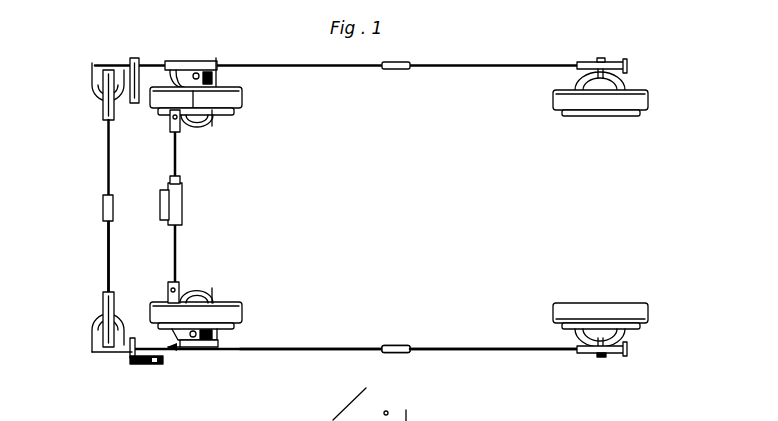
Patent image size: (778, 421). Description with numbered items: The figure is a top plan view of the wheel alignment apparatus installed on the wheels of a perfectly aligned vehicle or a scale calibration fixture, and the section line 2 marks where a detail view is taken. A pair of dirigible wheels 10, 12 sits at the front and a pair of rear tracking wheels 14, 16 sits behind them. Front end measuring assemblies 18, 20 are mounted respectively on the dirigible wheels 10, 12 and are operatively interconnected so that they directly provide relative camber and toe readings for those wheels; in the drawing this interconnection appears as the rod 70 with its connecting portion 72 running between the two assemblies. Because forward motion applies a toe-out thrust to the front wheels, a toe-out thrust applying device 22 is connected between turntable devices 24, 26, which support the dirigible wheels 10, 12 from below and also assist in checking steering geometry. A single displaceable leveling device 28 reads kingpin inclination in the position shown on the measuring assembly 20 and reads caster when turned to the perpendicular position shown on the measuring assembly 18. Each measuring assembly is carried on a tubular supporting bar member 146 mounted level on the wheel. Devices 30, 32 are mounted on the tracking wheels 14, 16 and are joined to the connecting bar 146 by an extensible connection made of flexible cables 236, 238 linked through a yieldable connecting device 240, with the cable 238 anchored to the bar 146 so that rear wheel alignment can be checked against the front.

The section line 2- 2 is at (193, 62).
The dirigible wheel 10 is at (250, 102).
The dirigible wheel 12 is at (247, 304).
The tracking wheel 14 is at (655, 100).
The tracking wheel 16 is at (655, 326).
The front end measuring assembly 18 is at (100, 54).
The front end measuring assembly 20 is at (90, 357).
The toe-out thrust applying device 22 is at (183, 242).
The turntable device 24 is at (206, 125).
The turntable device 26 is at (212, 290).
The displaceable leveling device 28 is at (134, 105).
The device 30 is at (632, 52).
The device 32 is at (600, 360).
The coupling 70 is at (104, 205).
The rod 72 is at (106, 250).
The tubular supporting bar member 146 is at (166, 349).
The flexible cable 236 is at (455, 340).
The flexible cable 238 is at (298, 340).
The yieldable connecting device 240 is at (395, 346).